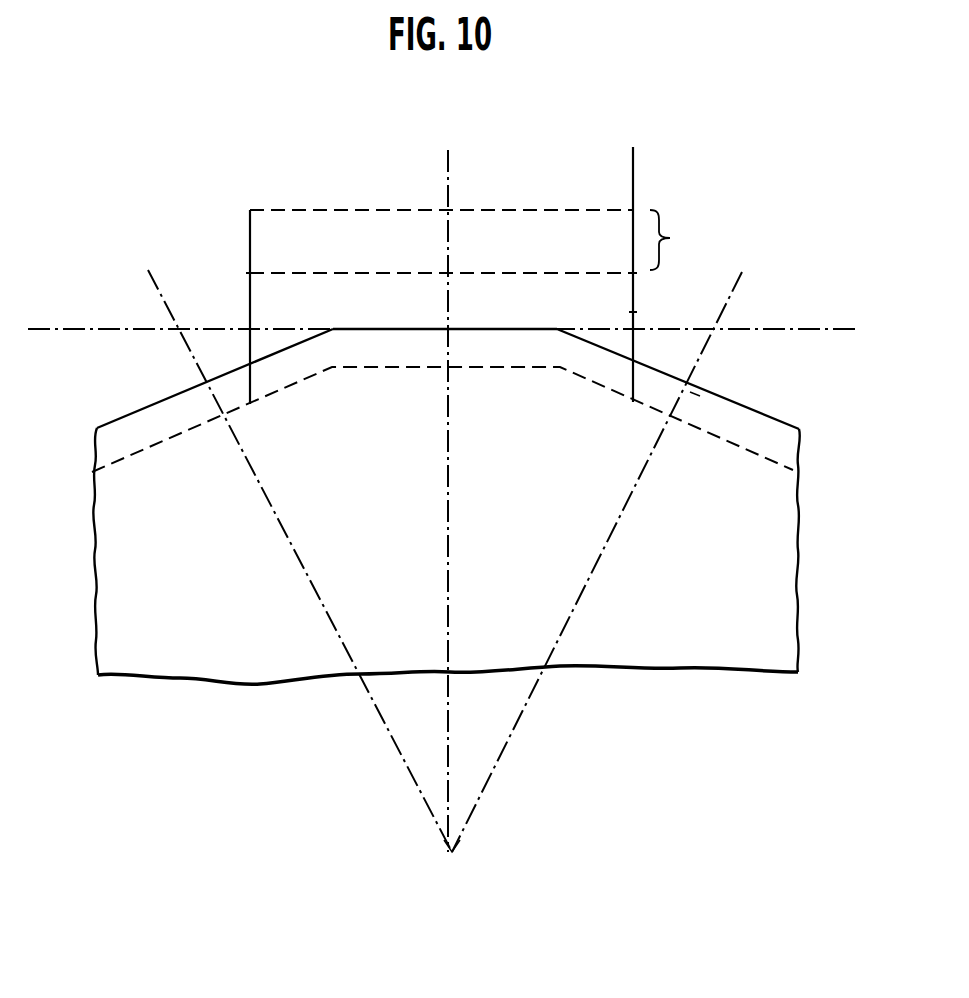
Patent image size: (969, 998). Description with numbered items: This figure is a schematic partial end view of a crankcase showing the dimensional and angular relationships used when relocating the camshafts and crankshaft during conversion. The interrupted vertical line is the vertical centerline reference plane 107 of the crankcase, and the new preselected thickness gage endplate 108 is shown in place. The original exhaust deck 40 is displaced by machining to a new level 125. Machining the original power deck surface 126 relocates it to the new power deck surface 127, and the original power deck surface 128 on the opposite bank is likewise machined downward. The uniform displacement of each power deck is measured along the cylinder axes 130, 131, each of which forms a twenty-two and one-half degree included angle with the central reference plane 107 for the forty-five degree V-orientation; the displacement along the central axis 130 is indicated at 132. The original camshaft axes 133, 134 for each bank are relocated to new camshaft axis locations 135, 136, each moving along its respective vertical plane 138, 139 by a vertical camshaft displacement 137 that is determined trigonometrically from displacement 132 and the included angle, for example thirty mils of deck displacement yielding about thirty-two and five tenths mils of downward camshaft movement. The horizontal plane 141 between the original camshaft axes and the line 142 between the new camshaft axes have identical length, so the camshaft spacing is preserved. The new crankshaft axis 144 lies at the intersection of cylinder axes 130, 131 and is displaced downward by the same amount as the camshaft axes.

The exhaust deck 40 is at (512, 329).
The vertical centerline reference plane 107 is at (448, 515).
The endplate 108 is at (755, 609).
The new exhaust deck level 125 is at (524, 368).
The original power deck surface 126 is at (782, 420).
The new power deck surface 127 is at (828, 550).
The original power deck surface 128 is at (128, 417).
The cylinder axis 130 is at (608, 553).
The cylinder axis 131 is at (290, 540).
The displacement 132 is at (690, 392).
The camshaft axis 133 is at (250, 211).
The camshaft axis 134 is at (633, 210).
The new camshaft axis location 135 is at (250, 273).
The new camshaft axis location 136 is at (633, 273).
The vertical camshaft displacement 137 is at (670, 238).
The vertical plane 138 is at (633, 309).
The vertical plane 139 is at (250, 327).
The horizontal plane 141 is at (346, 210).
The line between new camshaft axes 142 is at (540, 273).
The new crankshaft axis 144 is at (452, 852).